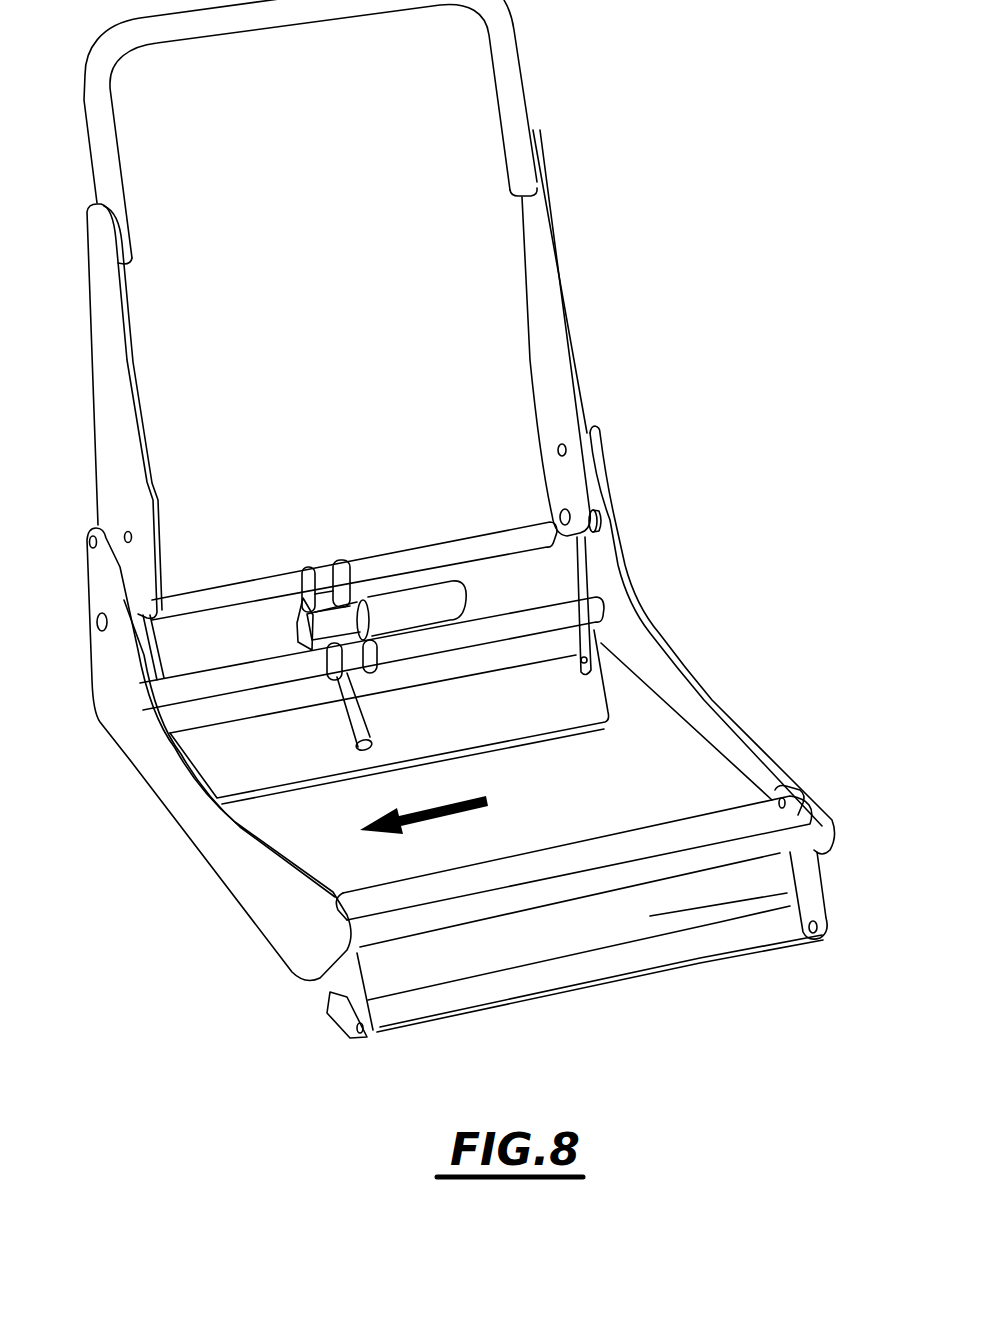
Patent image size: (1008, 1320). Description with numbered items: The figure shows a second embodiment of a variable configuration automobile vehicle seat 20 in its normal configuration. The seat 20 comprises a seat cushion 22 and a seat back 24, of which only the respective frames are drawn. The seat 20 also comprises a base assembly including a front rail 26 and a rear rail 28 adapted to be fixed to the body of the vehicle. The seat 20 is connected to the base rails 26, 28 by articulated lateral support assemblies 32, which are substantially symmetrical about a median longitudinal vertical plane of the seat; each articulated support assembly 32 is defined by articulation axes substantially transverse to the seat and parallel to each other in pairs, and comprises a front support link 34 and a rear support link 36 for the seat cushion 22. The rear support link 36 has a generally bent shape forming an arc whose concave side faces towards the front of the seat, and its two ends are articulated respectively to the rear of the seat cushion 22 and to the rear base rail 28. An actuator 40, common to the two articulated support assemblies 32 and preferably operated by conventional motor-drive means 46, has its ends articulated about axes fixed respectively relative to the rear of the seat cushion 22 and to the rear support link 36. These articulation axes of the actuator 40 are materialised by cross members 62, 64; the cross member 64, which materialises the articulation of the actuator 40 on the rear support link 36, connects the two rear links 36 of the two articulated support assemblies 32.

The seat 20 is at (512, 550).
The seat cushion 22 is at (706, 681).
The seat back 24 is at (567, 252).
The front rail 26 is at (592, 993).
The rear rail 28 is at (289, 765).
The articulated support assembly 32 is at (157, 652).
The front support link 34 is at (807, 880).
The rear support link 36 is at (575, 561).
The actuator 40 is at (293, 624).
The motor-drive means 46 is at (410, 610).
The cross member 62 is at (510, 625).
The cross member 64 is at (500, 540).